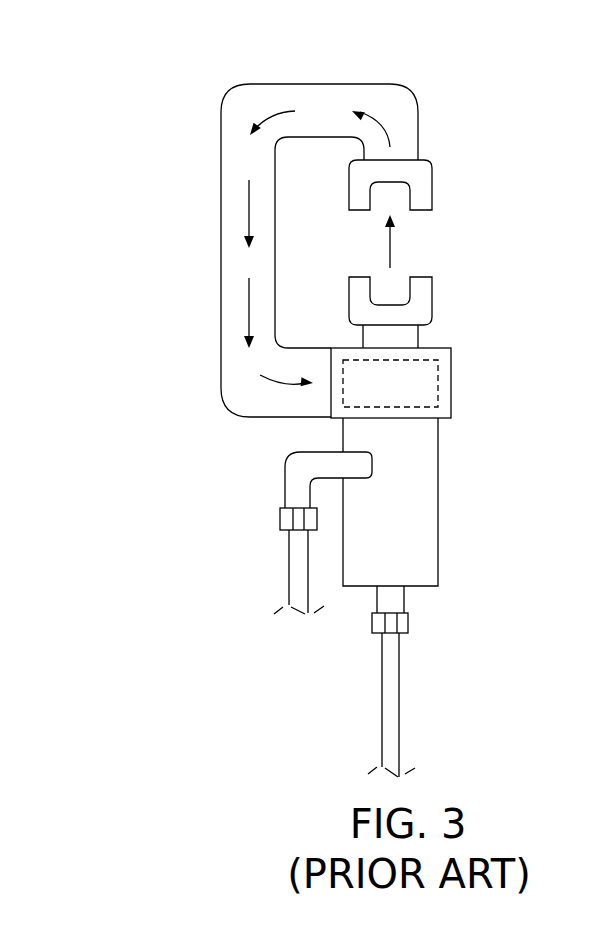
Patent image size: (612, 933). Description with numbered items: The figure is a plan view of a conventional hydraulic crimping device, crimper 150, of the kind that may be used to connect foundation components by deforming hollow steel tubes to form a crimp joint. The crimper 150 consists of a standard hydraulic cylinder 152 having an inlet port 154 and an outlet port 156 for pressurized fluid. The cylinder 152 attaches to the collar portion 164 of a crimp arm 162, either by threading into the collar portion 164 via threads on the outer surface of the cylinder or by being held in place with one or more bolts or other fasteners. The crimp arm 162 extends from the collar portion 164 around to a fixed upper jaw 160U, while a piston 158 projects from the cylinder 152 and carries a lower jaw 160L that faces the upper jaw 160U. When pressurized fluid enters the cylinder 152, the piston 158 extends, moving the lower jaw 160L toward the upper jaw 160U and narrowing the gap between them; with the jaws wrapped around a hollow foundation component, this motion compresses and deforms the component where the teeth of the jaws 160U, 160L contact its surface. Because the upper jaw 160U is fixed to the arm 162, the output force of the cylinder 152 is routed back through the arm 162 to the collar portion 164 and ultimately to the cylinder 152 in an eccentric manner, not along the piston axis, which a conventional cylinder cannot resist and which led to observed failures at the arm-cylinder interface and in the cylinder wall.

The crimper 150 is at (150, 92).
The hydraulic cylinder 152 is at (440, 515).
The inlet port 154 is at (410, 622).
The outlet port 156 is at (285, 475).
The piston 158 is at (418, 338).
The upper jaw 160U is at (433, 190).
The lower jaw 160L is at (433, 297).
The crimp arm 162 is at (322, 83).
The collar portion 164 is at (452, 383).